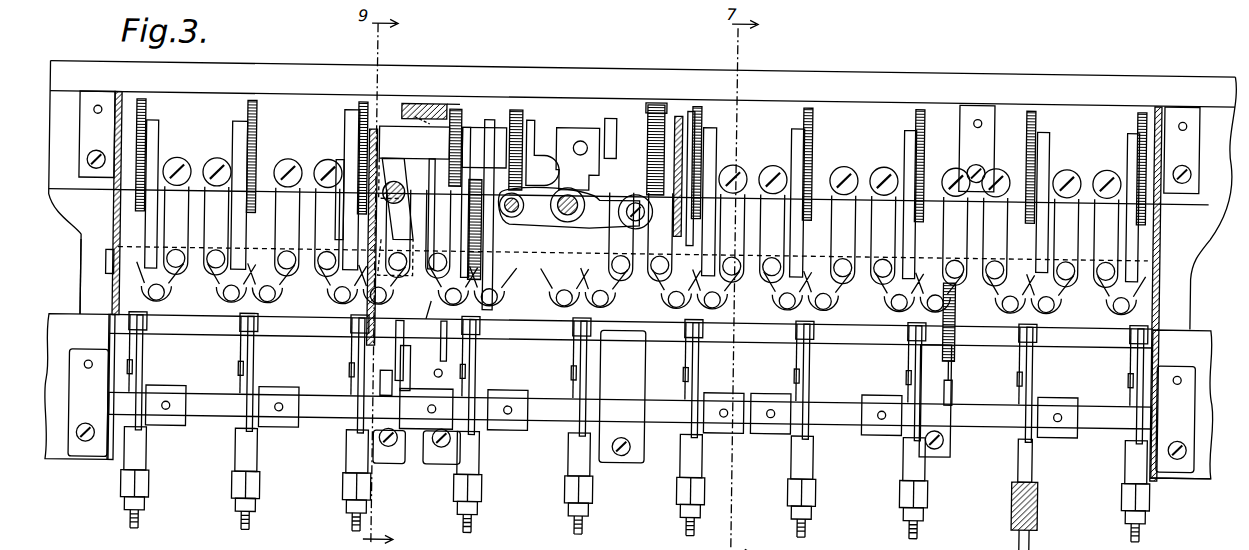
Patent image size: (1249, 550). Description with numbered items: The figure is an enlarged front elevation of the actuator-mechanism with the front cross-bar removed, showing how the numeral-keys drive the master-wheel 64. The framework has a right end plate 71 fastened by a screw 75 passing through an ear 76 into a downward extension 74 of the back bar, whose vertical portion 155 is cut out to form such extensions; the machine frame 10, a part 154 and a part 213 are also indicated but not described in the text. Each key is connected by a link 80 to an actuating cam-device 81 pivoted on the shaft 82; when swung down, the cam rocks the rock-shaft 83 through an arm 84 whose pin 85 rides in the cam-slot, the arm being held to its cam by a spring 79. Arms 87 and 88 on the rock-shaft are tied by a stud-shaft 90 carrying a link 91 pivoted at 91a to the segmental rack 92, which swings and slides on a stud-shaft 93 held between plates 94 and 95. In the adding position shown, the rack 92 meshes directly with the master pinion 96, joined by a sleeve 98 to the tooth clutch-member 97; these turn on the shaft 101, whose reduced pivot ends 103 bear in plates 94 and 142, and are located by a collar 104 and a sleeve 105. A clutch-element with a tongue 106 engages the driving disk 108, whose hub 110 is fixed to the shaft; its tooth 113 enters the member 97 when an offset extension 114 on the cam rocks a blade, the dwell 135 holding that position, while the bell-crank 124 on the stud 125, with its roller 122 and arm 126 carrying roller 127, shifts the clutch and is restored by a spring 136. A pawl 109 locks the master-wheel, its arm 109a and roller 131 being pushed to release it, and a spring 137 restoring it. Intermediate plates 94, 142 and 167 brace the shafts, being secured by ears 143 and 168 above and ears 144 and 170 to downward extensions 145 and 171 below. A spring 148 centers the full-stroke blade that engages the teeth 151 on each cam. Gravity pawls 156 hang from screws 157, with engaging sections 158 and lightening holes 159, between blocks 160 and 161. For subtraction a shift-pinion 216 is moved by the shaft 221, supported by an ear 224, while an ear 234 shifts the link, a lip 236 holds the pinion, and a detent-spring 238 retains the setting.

The frame 10 is at (116, 289).
The master-wheel 64 is at (656, 96).
The end plate 71 is at (84, 363).
The downward extension 74 is at (624, 398).
The screw 75 is at (81, 433).
The ear 76 is at (1186, 464).
The spring 79 is at (958, 325).
The link 80 is at (146, 516).
The actuating cam-device 81 is at (146, 114).
The shaft 82 is at (108, 258).
The rock-shaft 83 is at (110, 404).
The arm 84 is at (262, 358).
The pin 85 is at (243, 323).
The arm 87 is at (393, 370).
The arm 88 is at (438, 370).
The stud-shaft 90 is at (396, 342).
The link 91 is at (447, 309).
The pivotal connection 91a is at (441, 214).
The segmental rack 92 is at (446, 176).
The stud-shaft 93 is at (395, 257).
The intermediate plate 94 is at (374, 124).
The plate 95 is at (481, 115).
The master pinion 96 is at (456, 105).
The tooth clutch-member 97 is at (516, 105).
The sleeve 98 is at (484, 147).
The shaft 101 is at (505, 123).
The reduced pivot end 103 is at (378, 131).
The collar 104 is at (535, 193).
The sleeve 105 is at (345, 148).
The tongue 106 is at (612, 112).
The driving disk 108 is at (625, 115).
The pawl 109 is at (646, 221).
The arm 109a is at (536, 208).
The hub 110 is at (612, 83).
The tooth 113 is at (544, 87).
The offset extension 114 is at (1093, 147).
The roller 122 is at (604, 233).
The bell-crank 124 is at (534, 227).
The stud 125 is at (560, 227).
The arm 126 is at (588, 112).
The roller 127 is at (545, 151).
The roller 131 is at (510, 227).
The dwell 135 is at (1042, 134).
The spring 136 is at (578, 159).
The spring 137 is at (569, 208).
The intermediate plate 142 is at (663, 338).
The ear 143 is at (455, 100).
The ear 144 is at (393, 460).
The downward extension 145 is at (417, 460).
The spring 148 is at (961, 344).
The teeth 151 is at (1142, 99).
The pin 154 is at (992, 315).
The vertical portion 155 is at (527, 307).
The gravity pawl 156 is at (205, 212).
The screw 157 is at (205, 152).
The section 158 is at (1083, 299).
The hole 159 is at (1105, 287).
The block 160 is at (125, 205).
The block 161 is at (1160, 214).
The intermediate plate 167 is at (924, 445).
The ear 168 is at (990, 116).
The ear 170 is at (957, 457).
The downward extension 171 is at (988, 490).
The lever 213 is at (572, 112).
The shift-pinion 216 is at (425, 100).
The shaft 221 is at (382, 123).
The ear 224 is at (352, 206).
The ear 234 is at (418, 304).
The lip 236 is at (400, 123).
The detent-spring 238 is at (418, 110).